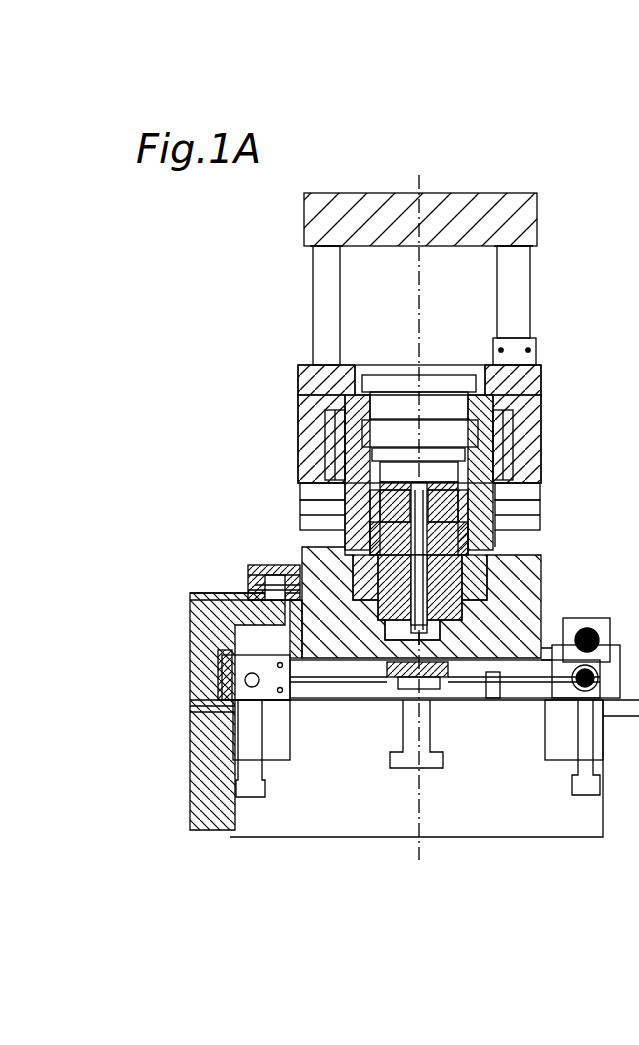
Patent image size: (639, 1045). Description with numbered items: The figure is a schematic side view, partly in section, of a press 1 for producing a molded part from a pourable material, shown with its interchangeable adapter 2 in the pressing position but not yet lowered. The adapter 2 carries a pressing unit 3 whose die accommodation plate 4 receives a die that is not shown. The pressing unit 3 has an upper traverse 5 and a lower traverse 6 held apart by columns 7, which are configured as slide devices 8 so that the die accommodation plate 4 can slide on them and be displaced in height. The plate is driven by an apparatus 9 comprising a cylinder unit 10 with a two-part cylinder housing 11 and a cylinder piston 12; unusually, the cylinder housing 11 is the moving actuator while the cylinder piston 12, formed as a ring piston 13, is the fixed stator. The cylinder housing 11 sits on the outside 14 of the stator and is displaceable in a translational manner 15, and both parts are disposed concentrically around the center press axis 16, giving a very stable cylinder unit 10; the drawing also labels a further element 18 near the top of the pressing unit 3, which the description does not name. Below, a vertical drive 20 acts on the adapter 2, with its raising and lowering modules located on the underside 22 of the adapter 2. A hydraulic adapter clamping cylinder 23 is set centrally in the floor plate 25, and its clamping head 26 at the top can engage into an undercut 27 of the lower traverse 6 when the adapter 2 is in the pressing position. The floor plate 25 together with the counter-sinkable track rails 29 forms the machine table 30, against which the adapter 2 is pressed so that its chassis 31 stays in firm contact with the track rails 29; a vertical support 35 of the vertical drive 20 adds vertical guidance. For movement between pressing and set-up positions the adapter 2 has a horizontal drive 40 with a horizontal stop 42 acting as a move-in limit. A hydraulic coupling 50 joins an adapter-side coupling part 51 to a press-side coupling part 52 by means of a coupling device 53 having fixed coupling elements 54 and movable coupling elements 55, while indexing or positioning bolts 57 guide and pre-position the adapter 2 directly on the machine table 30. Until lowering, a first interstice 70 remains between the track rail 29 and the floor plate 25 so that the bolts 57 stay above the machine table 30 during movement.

The press 1 is at (140, 245).
The interchangeable adapter 2 is at (225, 445).
The pressing unit 3 is at (455, 147).
The die accommodation plate 4 is at (298, 372).
The upper traverse 5 is at (304, 210).
The lower traverse 6 is at (530, 568).
The columns 7 is at (313, 263).
The slide devices 8 is at (302, 305).
The apparatus for driving the die 9 is at (272, 428).
The cylinder unit 10 is at (572, 418).
The cylinder housing 11 is at (541, 428).
The cylinder piston 12 is at (545, 481).
The ring piston 13 is at (310, 468).
The outside 14 is at (345, 515).
The translational displacement 15 is at (128, 315).
The center press axis 16 is at (419, 185).
The tool 18 is at (532, 137).
The vertical drive 20 is at (142, 798).
The underside 22 is at (427, 887).
The hydraulic adapter clamping cylinder 23 is at (403, 722).
The floor plate 25 is at (514, 820).
The clamping head 26 is at (450, 690).
The undercut 27 is at (480, 640).
The counter-sinkable track rails 29 is at (607, 708).
The machine table 30 is at (160, 713).
The chassis 31 is at (222, 660).
The vertical support 35 is at (152, 590).
The horizontal drive 40 is at (158, 636).
The horizontal stop 42 is at (190, 617).
The hydraulic coupling 50 is at (205, 562).
The adapter-side coupling part 51 is at (282, 575).
The press-side coupling part 52 is at (248, 597).
The coupling device 53 is at (250, 578).
The fixed coupling elements 54 is at (258, 603).
The movable coupling elements 55 is at (265, 585).
The indexing or positioning bolts 57 is at (498, 700).
The first interstice 70 is at (335, 700).